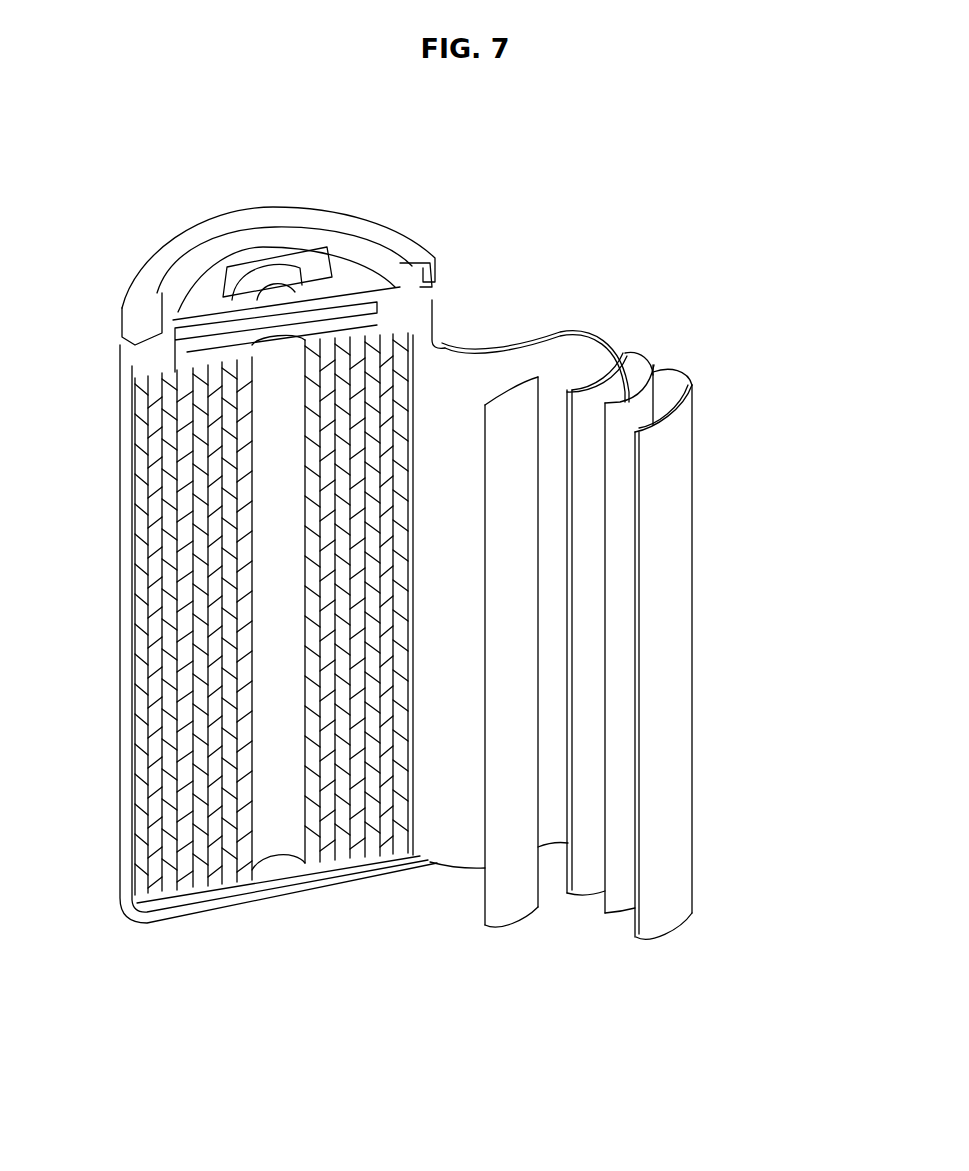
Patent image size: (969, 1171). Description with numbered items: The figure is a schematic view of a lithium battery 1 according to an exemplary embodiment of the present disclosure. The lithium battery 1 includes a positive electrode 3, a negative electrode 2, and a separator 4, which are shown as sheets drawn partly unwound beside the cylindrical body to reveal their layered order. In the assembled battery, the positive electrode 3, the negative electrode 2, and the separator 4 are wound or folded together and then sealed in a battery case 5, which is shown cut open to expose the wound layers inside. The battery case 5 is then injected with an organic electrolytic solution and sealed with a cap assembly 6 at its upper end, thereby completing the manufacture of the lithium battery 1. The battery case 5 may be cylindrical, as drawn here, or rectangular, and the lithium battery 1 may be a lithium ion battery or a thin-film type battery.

The lithium battery 1 is at (664, 305).
The negative electrode 2 is at (680, 507).
The positive electrode 3 is at (584, 402).
The separator 4 is at (646, 405).
The battery case 5 is at (120, 841).
The cap assembly 6 is at (292, 247).